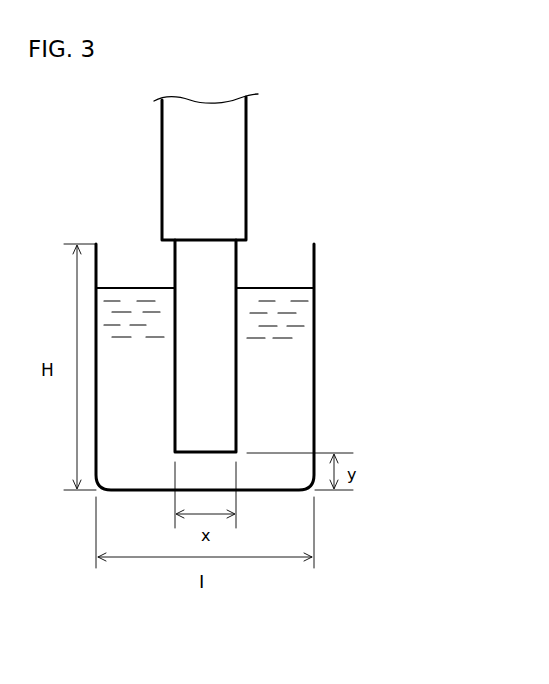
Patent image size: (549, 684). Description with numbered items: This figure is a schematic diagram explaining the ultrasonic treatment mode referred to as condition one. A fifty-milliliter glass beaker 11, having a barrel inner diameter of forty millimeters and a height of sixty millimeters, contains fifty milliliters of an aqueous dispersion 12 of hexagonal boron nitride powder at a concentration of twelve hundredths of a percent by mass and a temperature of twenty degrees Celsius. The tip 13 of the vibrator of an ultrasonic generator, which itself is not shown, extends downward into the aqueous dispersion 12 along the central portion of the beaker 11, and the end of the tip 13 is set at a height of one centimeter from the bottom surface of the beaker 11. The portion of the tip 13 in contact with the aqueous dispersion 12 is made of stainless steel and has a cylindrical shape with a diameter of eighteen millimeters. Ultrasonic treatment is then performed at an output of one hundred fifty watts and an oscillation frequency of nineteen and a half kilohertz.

The glass beaker 11 is at (315, 278).
The aqueous dispersion 12 is at (288, 388).
The tip of the vibrator 13 is at (259, 241).